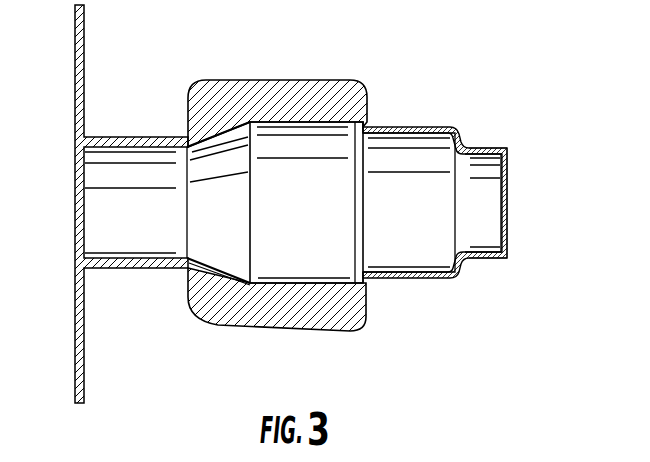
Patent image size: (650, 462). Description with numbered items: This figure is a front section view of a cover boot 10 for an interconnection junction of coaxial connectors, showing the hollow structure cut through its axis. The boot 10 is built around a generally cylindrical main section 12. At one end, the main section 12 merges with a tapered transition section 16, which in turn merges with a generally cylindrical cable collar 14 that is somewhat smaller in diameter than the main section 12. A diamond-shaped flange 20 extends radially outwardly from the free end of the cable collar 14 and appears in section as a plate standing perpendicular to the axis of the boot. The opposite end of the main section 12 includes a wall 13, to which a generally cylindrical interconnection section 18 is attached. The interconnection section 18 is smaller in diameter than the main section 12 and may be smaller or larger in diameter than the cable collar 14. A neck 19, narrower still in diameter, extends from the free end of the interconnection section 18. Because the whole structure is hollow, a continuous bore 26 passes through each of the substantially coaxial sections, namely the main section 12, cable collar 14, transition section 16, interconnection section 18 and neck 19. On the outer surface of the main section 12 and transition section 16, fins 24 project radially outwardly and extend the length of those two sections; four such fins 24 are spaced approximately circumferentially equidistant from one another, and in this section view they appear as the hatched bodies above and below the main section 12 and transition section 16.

The cover boot 10 is at (556, 175).
The main section 12 is at (337, 255).
The wall 13 is at (372, 125).
The cable collar 14 is at (136, 248).
The transition section 16 is at (203, 278).
The interconnection section 18 is at (430, 125).
The neck 19 is at (493, 148).
The flange 20 is at (80, 40).
The fins 24 is at (313, 90).
The bore 26 is at (440, 226).